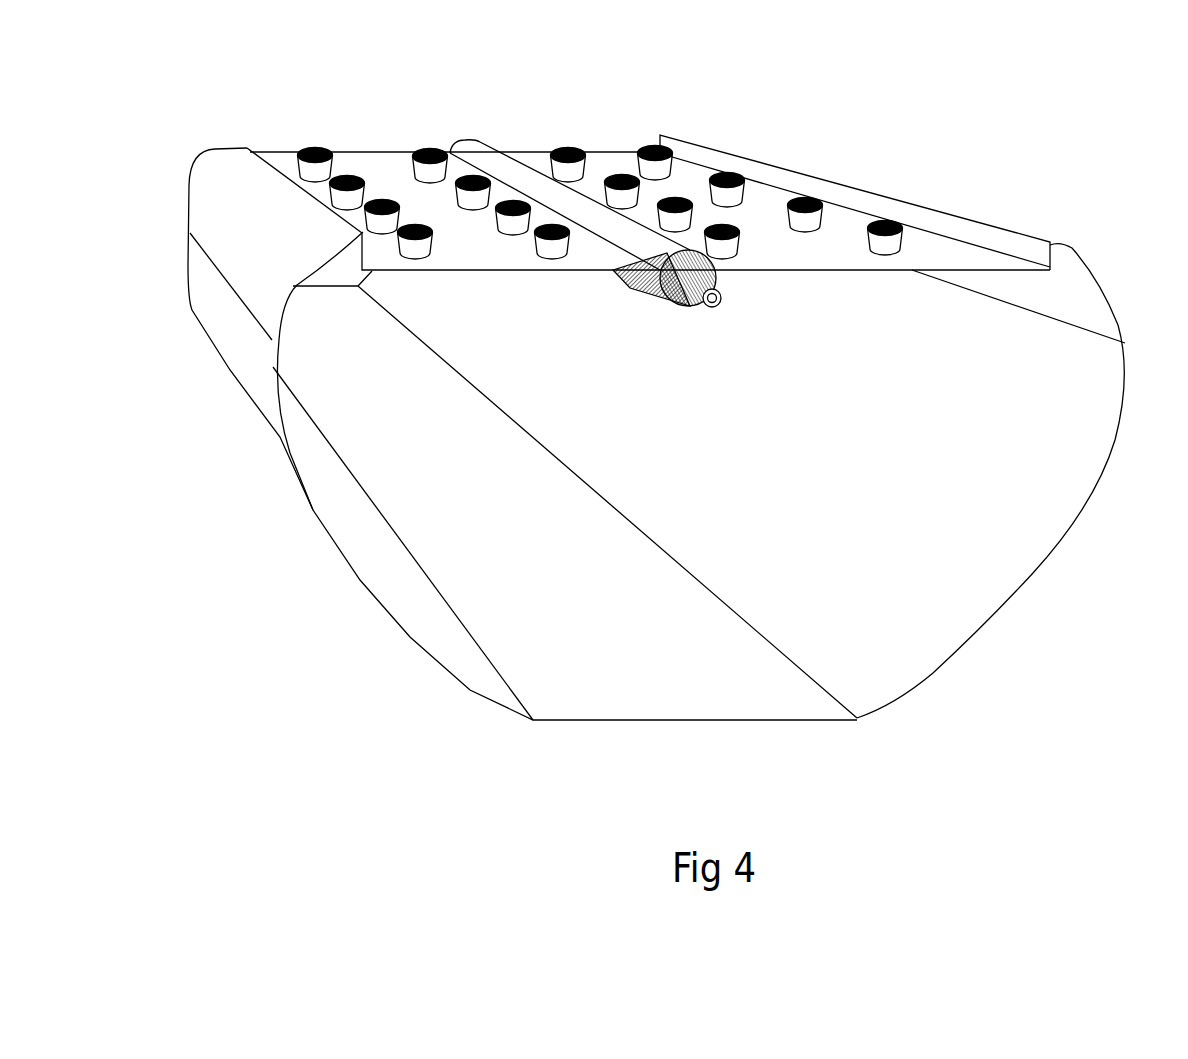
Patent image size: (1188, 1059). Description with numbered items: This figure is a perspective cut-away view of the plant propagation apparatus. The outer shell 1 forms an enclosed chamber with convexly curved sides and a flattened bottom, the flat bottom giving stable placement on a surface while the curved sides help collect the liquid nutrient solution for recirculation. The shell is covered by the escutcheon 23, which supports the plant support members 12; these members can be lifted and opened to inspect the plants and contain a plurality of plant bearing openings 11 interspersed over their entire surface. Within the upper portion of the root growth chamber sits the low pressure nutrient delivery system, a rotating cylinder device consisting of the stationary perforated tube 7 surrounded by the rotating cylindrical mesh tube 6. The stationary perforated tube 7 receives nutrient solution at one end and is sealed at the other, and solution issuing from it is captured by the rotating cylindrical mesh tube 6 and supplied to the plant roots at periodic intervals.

The outer shell 1 is at (1110, 450).
The plant support member 12 is at (389, 178).
The plant bearing openings 11 is at (667, 155).
The escutcheon 23 is at (1067, 247).
The rotating cylindrical mesh tube 6 is at (635, 285).
The stationary perforated tube 7 is at (722, 303).